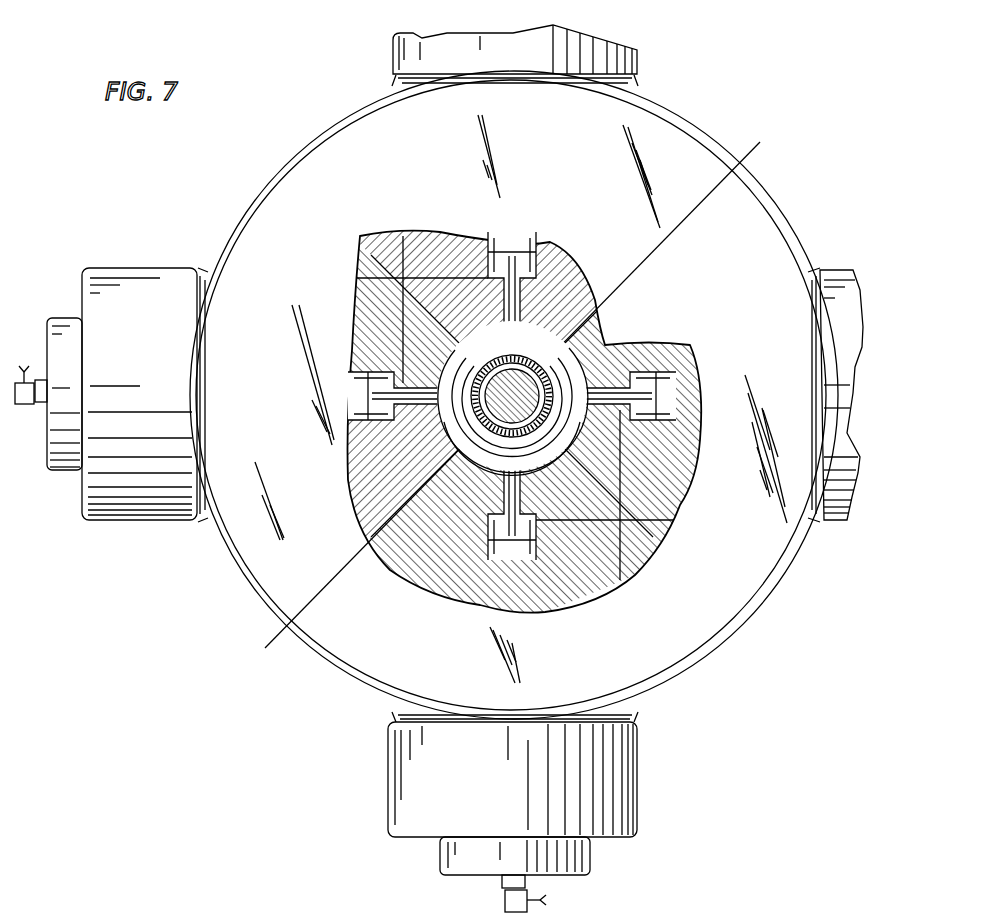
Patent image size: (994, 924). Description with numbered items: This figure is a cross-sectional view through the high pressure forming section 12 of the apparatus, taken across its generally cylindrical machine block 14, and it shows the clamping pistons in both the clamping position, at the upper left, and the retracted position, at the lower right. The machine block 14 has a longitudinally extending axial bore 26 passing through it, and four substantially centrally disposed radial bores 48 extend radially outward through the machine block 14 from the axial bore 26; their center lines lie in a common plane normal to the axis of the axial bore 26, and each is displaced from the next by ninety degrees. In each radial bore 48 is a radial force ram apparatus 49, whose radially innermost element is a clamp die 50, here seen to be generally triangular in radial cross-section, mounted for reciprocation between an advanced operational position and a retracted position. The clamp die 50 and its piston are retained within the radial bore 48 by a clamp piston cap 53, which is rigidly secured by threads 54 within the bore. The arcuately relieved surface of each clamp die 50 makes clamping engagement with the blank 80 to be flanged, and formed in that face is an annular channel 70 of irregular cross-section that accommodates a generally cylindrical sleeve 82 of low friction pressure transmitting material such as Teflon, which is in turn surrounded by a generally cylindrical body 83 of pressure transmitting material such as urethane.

The high pressure forming section 12 is at (338, 96).
The machine block 14 is at (292, 160).
The axial bore 26 is at (598, 356).
The radial bores 48 is at (420, 240).
The radial force ram apparatus 49 is at (660, 44).
The clamp die 50 is at (548, 290).
The clamp piston cap 53 is at (588, 46).
The threads 54 is at (640, 80).
The annular channel 70 is at (460, 378).
The blank 80 is at (468, 453).
The sleeve 82 is at (556, 332).
The body of pressure transmitting material 83 is at (542, 488).